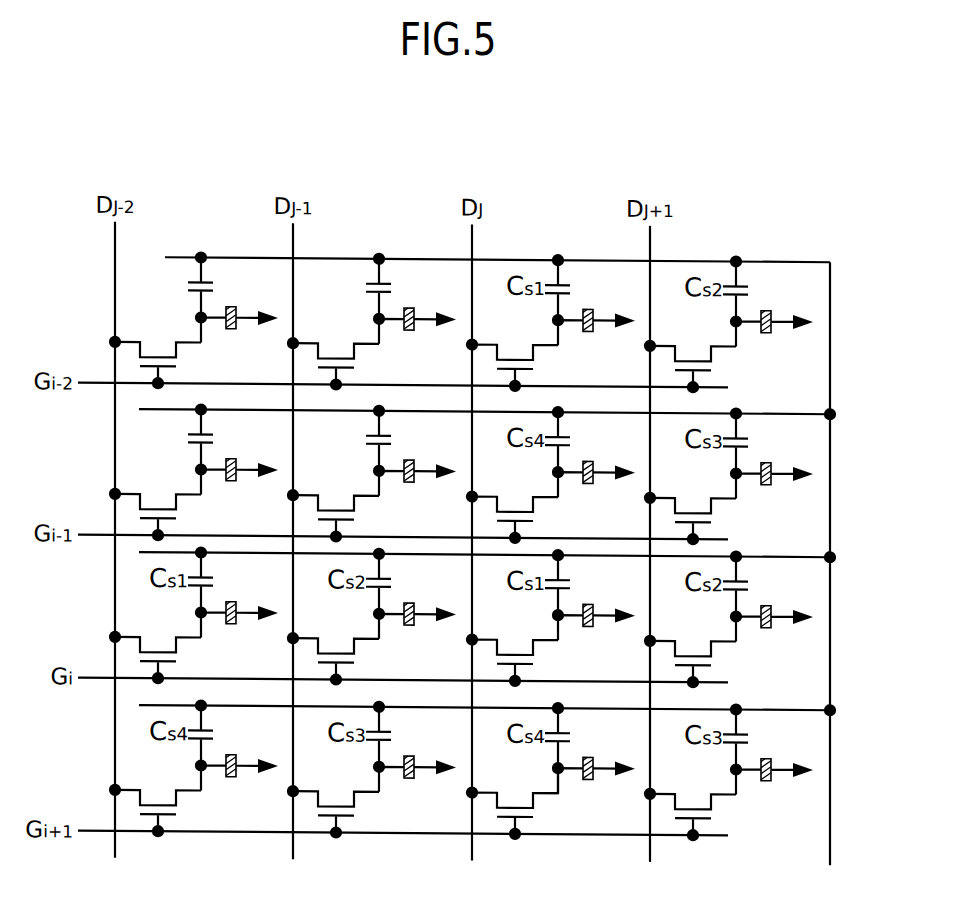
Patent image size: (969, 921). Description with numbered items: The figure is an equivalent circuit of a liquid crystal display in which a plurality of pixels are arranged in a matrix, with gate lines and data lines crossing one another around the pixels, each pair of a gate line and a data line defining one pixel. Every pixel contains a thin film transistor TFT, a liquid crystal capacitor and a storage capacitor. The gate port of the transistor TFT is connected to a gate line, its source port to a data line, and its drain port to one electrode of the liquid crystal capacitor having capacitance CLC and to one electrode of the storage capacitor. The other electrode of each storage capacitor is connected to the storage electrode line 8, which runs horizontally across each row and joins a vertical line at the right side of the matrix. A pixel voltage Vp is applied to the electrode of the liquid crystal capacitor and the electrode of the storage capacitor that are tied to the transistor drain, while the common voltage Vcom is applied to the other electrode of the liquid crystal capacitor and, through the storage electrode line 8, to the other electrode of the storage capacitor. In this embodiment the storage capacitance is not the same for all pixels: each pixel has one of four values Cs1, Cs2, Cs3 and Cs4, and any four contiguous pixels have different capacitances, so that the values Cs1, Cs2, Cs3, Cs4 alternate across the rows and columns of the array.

The storage electrode line 8 is at (807, 256).
The thin film transistor TFT is at (470, 819).
The liquid crystal capacitor capacitance CLC is at (594, 761).
The pixel voltage Vp is at (557, 821).
The common voltage Vcom is at (620, 803).
The first storage capacitance Cs1 is at (181, 284).
The second storage capacitance Cs2 is at (359, 285).
The third storage capacitance Cs3 is at (359, 437).
The fourth storage capacitance Cs4 is at (181, 436).